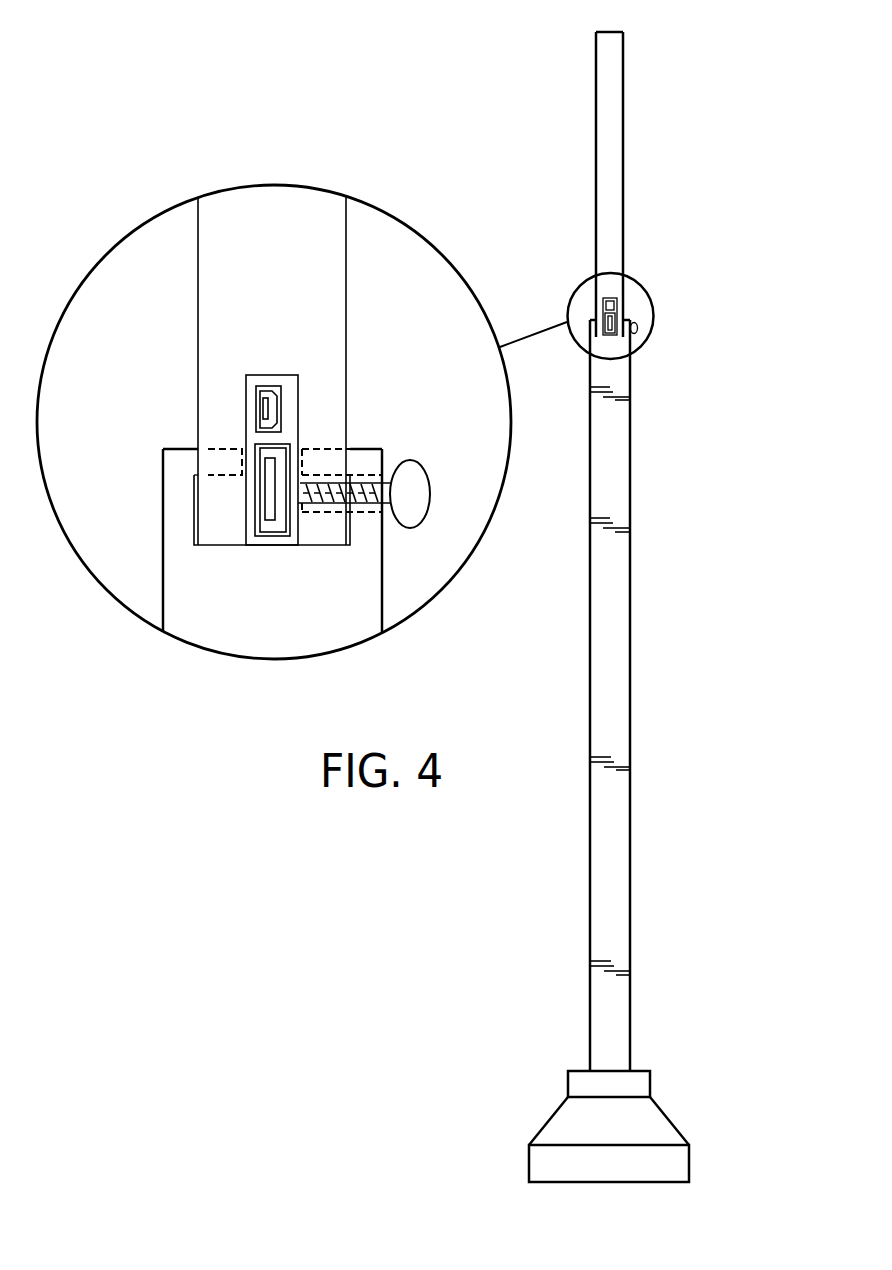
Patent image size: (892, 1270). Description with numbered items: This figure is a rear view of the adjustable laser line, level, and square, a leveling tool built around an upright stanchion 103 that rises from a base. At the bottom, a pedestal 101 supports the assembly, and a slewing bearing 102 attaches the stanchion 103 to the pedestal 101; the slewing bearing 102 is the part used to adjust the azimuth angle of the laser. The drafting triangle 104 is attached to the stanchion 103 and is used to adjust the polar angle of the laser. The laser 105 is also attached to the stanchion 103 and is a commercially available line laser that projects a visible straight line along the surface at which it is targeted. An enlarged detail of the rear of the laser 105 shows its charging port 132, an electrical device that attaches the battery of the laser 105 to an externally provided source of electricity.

The pedestal 101 is at (687, 1167).
The slewing bearing 102 is at (643, 1078).
The stanchion 103 is at (625, 953).
The drafting triangle 104 is at (614, 214).
The laser 105 is at (265, 378).
The charging port 132 is at (258, 405).